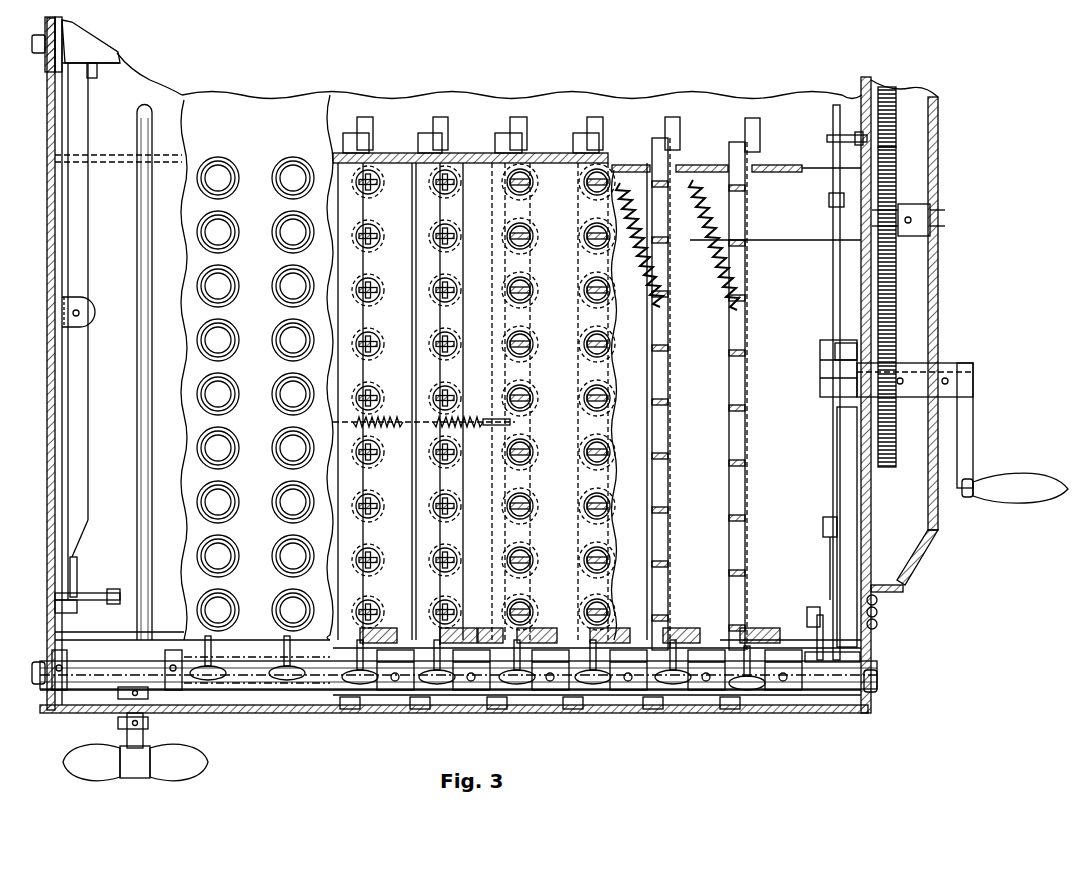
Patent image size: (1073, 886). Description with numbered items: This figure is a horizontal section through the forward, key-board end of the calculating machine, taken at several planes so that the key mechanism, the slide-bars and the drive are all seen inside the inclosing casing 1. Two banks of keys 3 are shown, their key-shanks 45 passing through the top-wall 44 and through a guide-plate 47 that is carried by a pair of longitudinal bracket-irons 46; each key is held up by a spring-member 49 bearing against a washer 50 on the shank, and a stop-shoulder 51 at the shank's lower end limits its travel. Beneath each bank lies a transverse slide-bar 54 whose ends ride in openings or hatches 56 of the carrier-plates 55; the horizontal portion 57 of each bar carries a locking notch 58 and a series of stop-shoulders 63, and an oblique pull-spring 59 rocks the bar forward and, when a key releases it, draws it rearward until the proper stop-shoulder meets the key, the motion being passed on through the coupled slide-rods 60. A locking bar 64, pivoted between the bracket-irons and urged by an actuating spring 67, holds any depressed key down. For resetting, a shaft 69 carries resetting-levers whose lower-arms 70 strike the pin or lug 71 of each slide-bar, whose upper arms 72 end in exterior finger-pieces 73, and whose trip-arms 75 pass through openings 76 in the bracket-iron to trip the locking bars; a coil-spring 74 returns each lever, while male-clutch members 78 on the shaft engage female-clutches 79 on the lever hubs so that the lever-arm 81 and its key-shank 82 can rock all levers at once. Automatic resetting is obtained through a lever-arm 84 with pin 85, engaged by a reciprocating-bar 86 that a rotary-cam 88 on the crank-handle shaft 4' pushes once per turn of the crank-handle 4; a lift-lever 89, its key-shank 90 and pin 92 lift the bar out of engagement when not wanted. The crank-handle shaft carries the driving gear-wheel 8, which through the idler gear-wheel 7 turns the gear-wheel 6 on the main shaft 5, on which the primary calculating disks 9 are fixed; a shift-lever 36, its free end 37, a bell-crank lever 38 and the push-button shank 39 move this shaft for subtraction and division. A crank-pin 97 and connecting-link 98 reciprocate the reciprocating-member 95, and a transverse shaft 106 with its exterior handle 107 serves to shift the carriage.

The inclosing casing 1 is at (212, 700).
The keys 3 is at (280, 240).
The crank-handle 4 is at (1015, 472).
The crank-handle shaft 4' is at (884, 425).
The main shaft 5 is at (32, 44).
The gear-wheel 6 is at (896, 118).
The idler gear-wheel 7 is at (897, 180).
The driving gear-wheel 8 is at (897, 352).
The primary calculating disks or segments 9 is at (97, 70).
The shift-lever 36 is at (82, 378).
The free end of shift-lever 37 is at (68, 78).
The bell-crank lever 38 is at (77, 580).
The shank of push-button 39 is at (107, 600).
The top-wall 44 is at (257, 389).
The key-shanks 45 is at (442, 452).
The bracket-irons 46 is at (468, 152).
The guide-plate 47 is at (614, 322).
The spring-members 49 is at (592, 200).
The washer 50 is at (435, 320).
The stop-shoulder 51 is at (575, 528).
The slide-bar 54 is at (603, 150).
The carrier-plates 55 is at (729, 160).
The openings or hatches 56 is at (700, 160).
The horizontal portion 57 is at (745, 388).
The notch or cutaway portion 58 is at (748, 605).
The pull-spring 59 is at (642, 250).
The slide-rods 60 is at (373, 122).
The stop-shoulders 63 is at (652, 395).
The locking bar 64 is at (365, 212).
The actuating spring 67 is at (385, 412).
The shaft 69 is at (106, 672).
The lower-arms of resetting-levers 70 is at (440, 652).
The pin or lug 71 is at (355, 710).
The upper arms of resetting-levers 72 is at (280, 652).
The finger-pieces 73 is at (212, 680).
The coil-spring 74 is at (380, 690).
The trip-arm 75 is at (350, 690).
The openings in bracket-iron 76 is at (325, 680).
The male-clutch members 78 is at (418, 710).
The female-clutch 79 is at (420, 600).
The lever-arm 81 is at (817, 626).
The key-shank 82 is at (812, 607).
The lever-arm 84 is at (830, 648).
The pin or lug 85 is at (860, 657).
The reciprocating-bar 86 is at (840, 500).
The rotary-cam 88 is at (840, 343).
The lift-lever 89 is at (830, 552).
The key-shank 90 is at (823, 522).
The pin or lug 92 is at (878, 602).
The reciprocating-member 95 is at (836, 154).
The crank-pin 97 is at (820, 372).
The connecting-link 98 is at (833, 292).
The transverse shaft 106 is at (137, 140).
The handle 107 is at (95, 775).